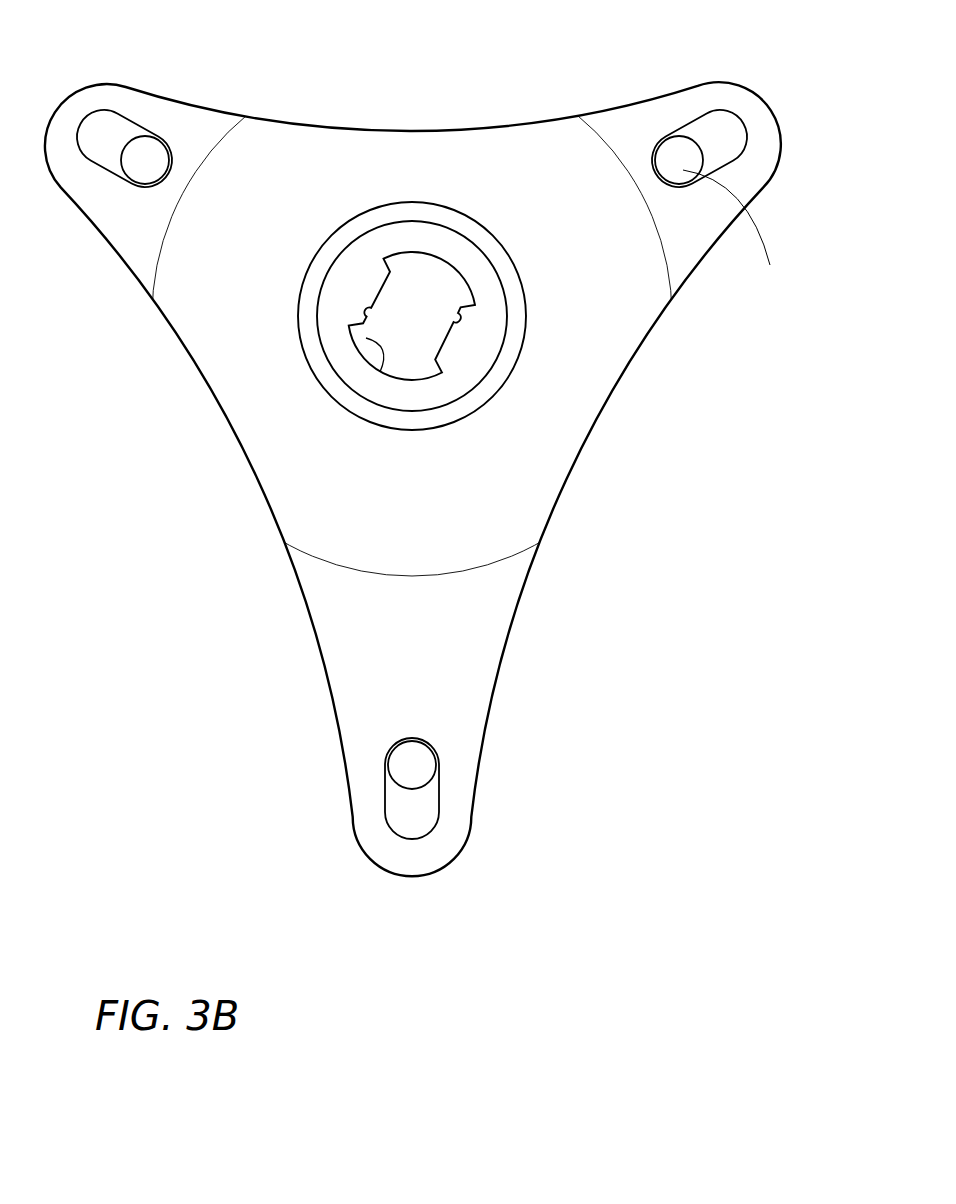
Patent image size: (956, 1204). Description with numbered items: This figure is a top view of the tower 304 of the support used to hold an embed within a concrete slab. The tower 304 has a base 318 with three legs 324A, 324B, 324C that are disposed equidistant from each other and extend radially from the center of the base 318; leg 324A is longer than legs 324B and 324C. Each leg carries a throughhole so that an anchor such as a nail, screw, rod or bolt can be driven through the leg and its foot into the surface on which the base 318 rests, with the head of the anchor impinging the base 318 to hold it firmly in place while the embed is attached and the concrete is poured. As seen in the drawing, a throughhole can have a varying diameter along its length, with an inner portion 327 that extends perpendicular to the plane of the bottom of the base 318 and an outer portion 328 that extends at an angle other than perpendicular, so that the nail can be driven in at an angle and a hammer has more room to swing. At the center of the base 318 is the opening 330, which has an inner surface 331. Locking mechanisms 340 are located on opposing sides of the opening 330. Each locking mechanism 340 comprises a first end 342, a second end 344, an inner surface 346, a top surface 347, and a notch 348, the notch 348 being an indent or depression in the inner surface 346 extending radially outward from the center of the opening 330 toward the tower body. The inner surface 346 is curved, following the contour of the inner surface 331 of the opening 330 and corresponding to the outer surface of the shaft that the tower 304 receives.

The tower 304 is at (130, 510).
The base 318 is at (540, 140).
The leg 324A is at (452, 650).
The leg 324B is at (190, 127).
The leg 324C is at (683, 237).
The inner portion 327 is at (657, 167).
The outer portion 328 is at (720, 142).
The opening 330 is at (400, 352).
The inner surface 331 is at (366, 338).
The locking mechanism 340 is at (468, 343).
The first end 342 is at (436, 364).
The second end 344 is at (462, 312).
The inner surface 346 is at (448, 345).
The top surface 347 is at (452, 360).
The notch 348 is at (467, 348).